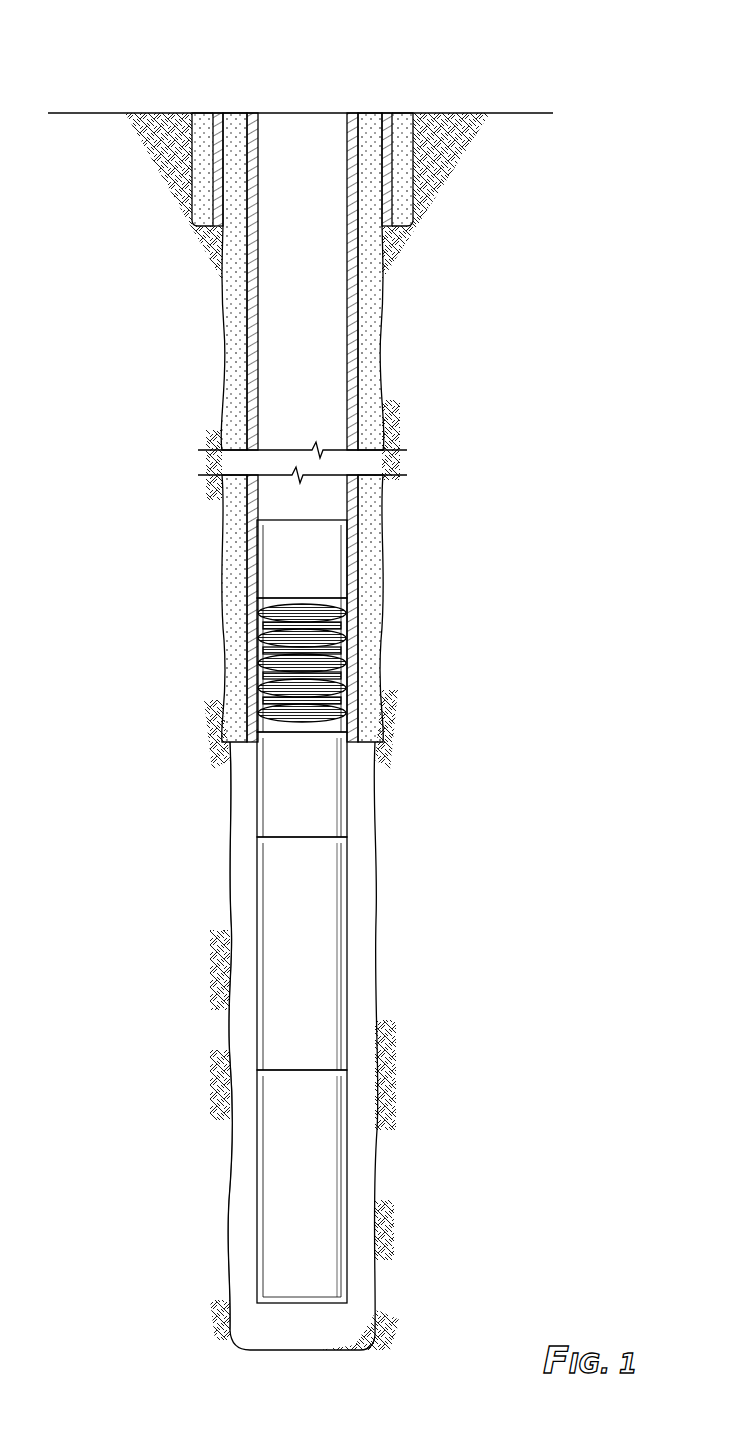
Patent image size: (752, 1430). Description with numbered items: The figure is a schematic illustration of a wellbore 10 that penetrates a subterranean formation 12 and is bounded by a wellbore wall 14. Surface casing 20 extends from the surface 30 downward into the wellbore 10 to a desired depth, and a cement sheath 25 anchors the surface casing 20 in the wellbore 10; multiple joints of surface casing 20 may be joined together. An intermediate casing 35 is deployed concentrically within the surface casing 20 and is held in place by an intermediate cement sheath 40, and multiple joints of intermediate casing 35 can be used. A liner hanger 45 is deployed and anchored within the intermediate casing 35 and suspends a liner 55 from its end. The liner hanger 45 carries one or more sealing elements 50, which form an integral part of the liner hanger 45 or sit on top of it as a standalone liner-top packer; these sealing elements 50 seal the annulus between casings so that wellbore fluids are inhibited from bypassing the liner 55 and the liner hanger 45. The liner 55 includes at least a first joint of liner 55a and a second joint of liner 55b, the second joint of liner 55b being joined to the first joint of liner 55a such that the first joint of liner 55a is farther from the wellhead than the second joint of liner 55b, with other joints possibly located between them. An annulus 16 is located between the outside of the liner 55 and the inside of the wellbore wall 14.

The wellbore 10 is at (257, 66).
The subterranean formation 12 is at (468, 966).
The wellbore wall 14 is at (373, 848).
The annulus 16 is at (250, 1168).
The surface casing 20 is at (385, 185).
The cement sheath 25 is at (405, 118).
The surface 30 is at (125, 113).
The intermediate casing 35 is at (252, 343).
The intermediate cement sheath 40 is at (233, 310).
The liner hanger 45 is at (258, 790).
The sealing elements 50 is at (265, 655).
The liner 55 is at (237, 1070).
The first joint of liner 55a is at (258, 1115).
The second joint of liner 55b is at (258, 907).